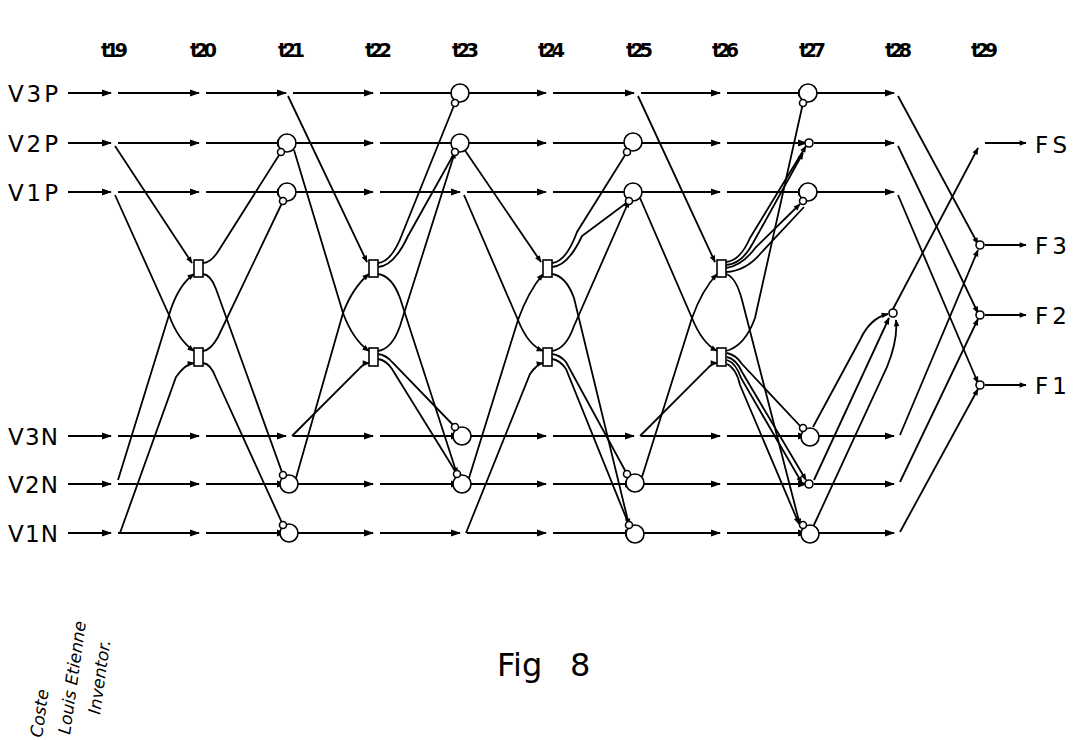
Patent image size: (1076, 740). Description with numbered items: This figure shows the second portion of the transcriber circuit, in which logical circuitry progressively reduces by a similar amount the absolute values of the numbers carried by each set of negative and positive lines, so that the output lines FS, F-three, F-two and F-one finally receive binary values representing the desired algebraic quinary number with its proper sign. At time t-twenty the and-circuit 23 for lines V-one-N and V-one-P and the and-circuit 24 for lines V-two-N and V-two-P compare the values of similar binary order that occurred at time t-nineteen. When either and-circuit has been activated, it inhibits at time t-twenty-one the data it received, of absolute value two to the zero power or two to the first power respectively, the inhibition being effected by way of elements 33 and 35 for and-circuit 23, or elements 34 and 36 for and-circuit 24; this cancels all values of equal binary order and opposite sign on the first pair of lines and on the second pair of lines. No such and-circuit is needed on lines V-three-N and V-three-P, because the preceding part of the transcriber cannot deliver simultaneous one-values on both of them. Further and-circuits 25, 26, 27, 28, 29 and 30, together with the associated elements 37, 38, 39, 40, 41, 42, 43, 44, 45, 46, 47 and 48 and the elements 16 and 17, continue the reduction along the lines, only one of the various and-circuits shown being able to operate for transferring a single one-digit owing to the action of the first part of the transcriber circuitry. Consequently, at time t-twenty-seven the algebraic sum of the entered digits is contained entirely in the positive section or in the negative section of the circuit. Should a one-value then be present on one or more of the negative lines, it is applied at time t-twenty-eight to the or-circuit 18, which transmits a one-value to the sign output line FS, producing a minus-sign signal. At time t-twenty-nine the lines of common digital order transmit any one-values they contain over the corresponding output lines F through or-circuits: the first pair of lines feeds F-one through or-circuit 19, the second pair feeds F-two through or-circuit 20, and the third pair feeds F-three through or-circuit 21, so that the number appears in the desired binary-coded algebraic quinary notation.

The unit u16 16 is at (812, 491).
The unit u17 17 is at (821, 150).
The or-circuit 18 is at (882, 305).
The or-circuit 19 is at (993, 392).
The or-circuit 20 is at (993, 322).
The or-circuit 21 is at (993, 252).
The and-circuit 23 is at (199, 367).
The and-circuit 24 is at (199, 279).
The processing element e25 25 is at (374, 367).
The processing element e26 26 is at (374, 279).
The processing element e27 27 is at (548, 367).
The processing element e28 28 is at (548, 279).
The processing element e29 29 is at (722, 367).
The processing element e30 30 is at (722, 279).
The inhibition element 33 is at (290, 541).
The inhibition element 34 is at (290, 491).
The inhibition element 35 is at (283, 187).
The inhibition element 36 is at (283, 138).
The node n37 37 is at (456, 491).
The node n38 38 is at (467, 427).
The node n39 39 is at (473, 140).
The node n40 40 is at (468, 101).
The node n41 41 is at (637, 541).
The node n42 42 is at (638, 474).
The node n43 43 is at (632, 187).
The node n44 44 is at (630, 138).
The node n45 45 is at (810, 541).
The node n46 46 is at (809, 443).
The node n47 47 is at (816, 199).
The node n48 48 is at (816, 101).